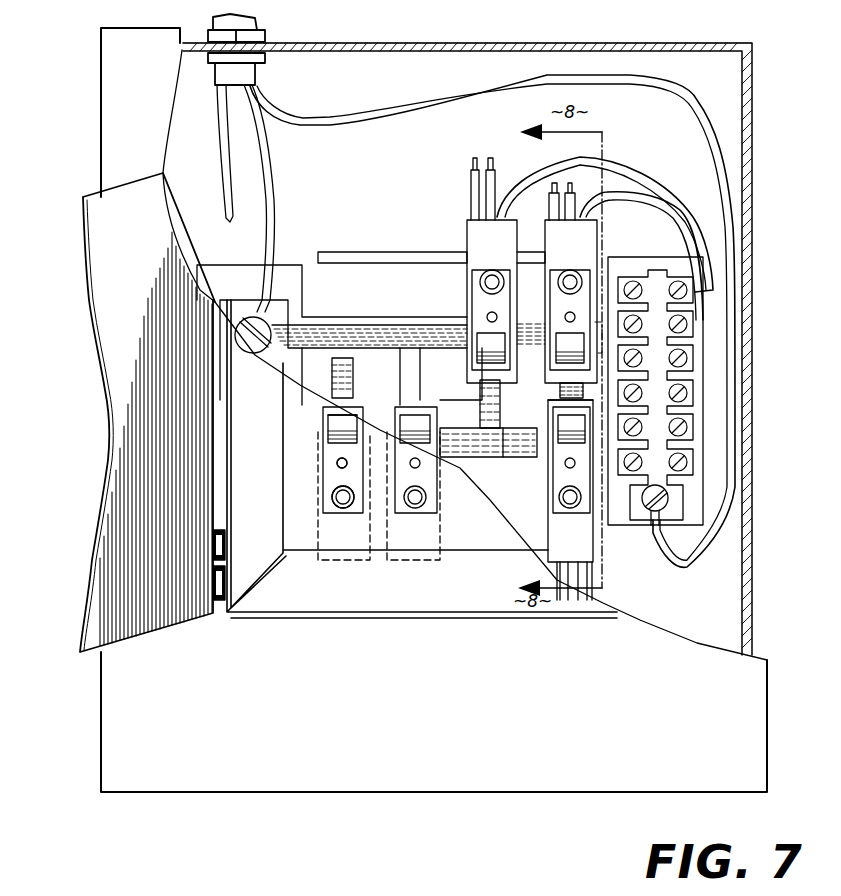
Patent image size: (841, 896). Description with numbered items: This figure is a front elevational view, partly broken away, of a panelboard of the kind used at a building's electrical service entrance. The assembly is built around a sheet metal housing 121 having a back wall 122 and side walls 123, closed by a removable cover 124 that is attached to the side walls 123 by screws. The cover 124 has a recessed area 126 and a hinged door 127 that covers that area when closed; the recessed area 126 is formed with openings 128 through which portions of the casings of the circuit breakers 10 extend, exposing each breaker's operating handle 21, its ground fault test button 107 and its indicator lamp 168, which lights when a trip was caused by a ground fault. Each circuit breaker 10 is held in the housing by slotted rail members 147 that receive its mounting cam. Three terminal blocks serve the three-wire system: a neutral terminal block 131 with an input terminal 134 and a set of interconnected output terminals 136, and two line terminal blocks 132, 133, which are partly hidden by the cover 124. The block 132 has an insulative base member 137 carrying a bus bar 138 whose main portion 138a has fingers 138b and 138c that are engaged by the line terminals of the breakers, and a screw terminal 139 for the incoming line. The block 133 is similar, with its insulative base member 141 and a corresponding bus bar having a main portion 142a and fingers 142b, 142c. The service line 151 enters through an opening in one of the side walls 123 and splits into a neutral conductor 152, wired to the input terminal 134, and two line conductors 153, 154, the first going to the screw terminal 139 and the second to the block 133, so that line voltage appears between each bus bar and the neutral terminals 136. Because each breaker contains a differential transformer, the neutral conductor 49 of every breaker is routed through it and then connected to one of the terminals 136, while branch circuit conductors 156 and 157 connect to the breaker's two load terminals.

The circuit breaker 10 is at (467, 248).
The operating handle 21 is at (335, 430).
The neutral conductor 49 is at (652, 195).
The ground fault circuit test button 107 is at (332, 500).
The housing 121 is at (512, 41).
The back wall 122 is at (404, 182).
The side wall 123 is at (355, 43).
The removable cover 124 is at (101, 98).
The recessed area 126 is at (460, 540).
The hinged door 127 is at (95, 300).
The opening 128 is at (360, 516).
The neutral terminal block 131 is at (700, 342).
The line terminal block 132 is at (284, 264).
The line terminal block 133 is at (527, 458).
The input terminal 134 is at (652, 510).
The output terminal 136 is at (687, 394).
The insulative base member 137 is at (304, 285).
The bus bar 138 is at (325, 348).
The main portion 138a is at (350, 325).
The finger 138b is at (451, 374).
The finger 138c is at (560, 390).
The screw terminal 139 is at (247, 340).
The insulative base member 141 is at (476, 462).
The main portion of bus bar 142a is at (516, 445).
The finger of bus bar 142b is at (353, 372).
The finger of bus bar 142c is at (480, 403).
The slotted rail member 147 is at (405, 250).
The service line 151 is at (262, 27).
The neutral conductor 152 is at (315, 115).
The line conductor 153 is at (268, 190).
The line conductor 154 is at (218, 160).
The branch circuit conductor 156 is at (472, 188).
The branch circuit conductor 157 is at (500, 185).
The indicator lamp 168 is at (336, 463).